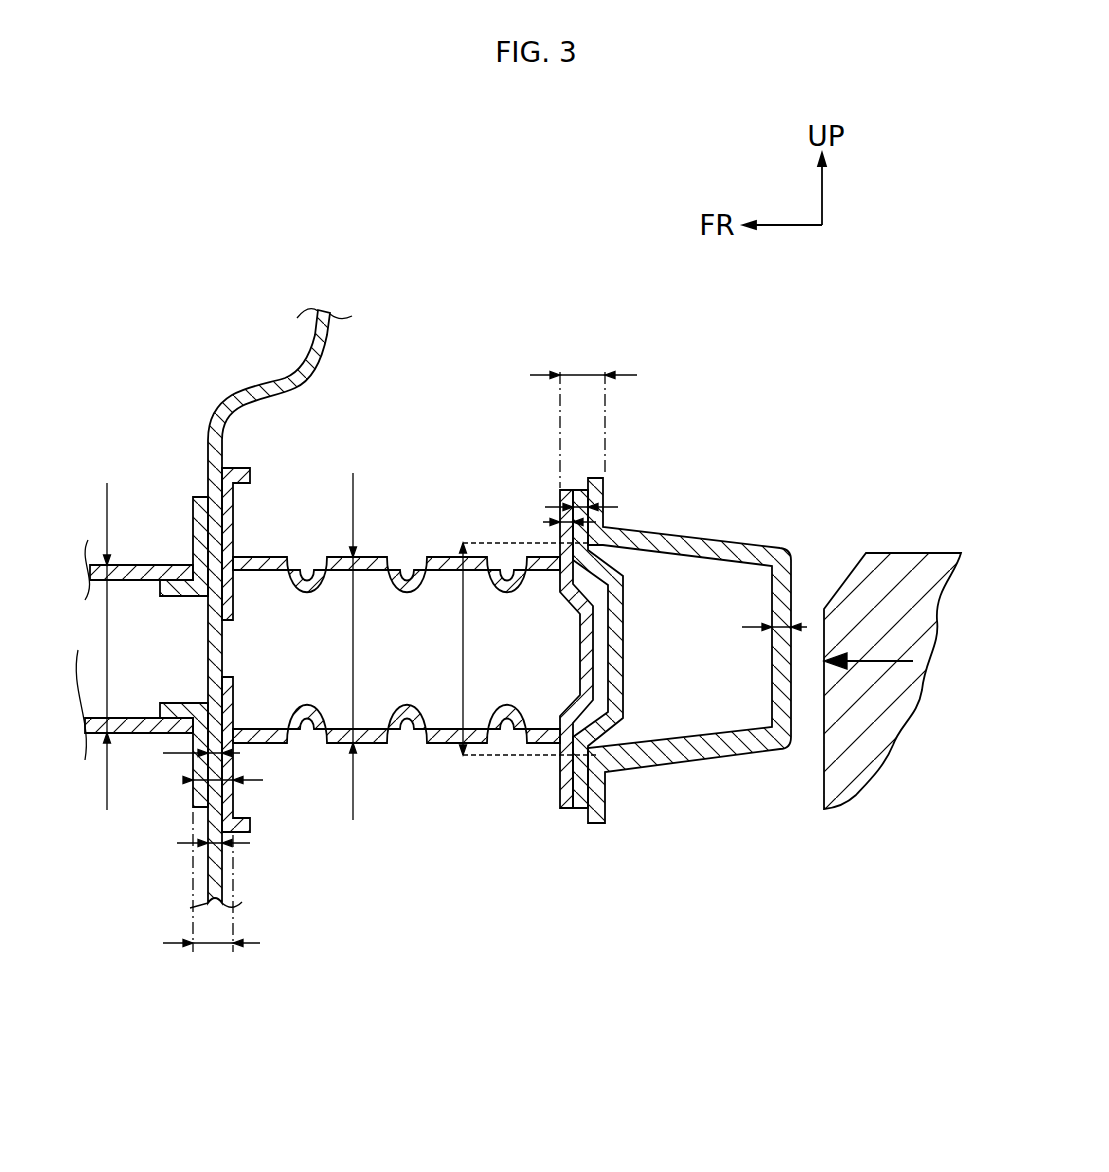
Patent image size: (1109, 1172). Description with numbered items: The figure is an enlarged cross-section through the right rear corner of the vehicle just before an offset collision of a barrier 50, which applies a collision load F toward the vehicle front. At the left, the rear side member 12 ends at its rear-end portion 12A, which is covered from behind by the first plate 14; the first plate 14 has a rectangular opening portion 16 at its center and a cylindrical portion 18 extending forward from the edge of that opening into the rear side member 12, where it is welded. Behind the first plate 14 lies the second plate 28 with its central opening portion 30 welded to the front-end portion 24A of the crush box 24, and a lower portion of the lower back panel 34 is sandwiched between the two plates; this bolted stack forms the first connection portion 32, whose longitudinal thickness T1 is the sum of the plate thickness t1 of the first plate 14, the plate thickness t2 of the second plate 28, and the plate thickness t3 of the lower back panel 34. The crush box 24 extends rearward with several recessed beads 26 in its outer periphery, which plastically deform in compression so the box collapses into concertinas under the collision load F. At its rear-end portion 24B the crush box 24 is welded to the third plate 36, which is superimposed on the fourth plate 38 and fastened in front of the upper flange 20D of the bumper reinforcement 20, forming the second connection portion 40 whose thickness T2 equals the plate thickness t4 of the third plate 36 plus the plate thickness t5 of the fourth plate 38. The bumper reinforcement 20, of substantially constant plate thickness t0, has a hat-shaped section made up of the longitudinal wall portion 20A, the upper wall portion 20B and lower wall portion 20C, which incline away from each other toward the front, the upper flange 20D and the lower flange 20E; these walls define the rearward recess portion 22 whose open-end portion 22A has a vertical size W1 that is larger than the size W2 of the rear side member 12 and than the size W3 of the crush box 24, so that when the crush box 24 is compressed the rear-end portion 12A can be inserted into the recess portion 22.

The rear side member 12 is at (134, 705).
The rear-end portion of the rear side member 12A is at (162, 562).
The first plate 14 is at (197, 496).
The rectangular opening portion 16 is at (203, 599).
The cylindrical portion 18 is at (190, 701).
The bumper reinforcement 20 is at (774, 538).
The longitudinal wall portion 20A is at (794, 594).
The upper wall portion 20B is at (698, 538).
The lower wall portion 20C is at (742, 756).
The upper flange 20D is at (605, 489).
The lower flange 20E is at (608, 822).
The recess portion 22 is at (678, 764).
The open-end portion of the recess portion 22A is at (617, 745).
The crush box 24 is at (372, 552).
The front-end portion of the crush box 24A is at (262, 556).
The rear-end portion of the crush box 24B is at (555, 726).
The recessed bead 26 is at (405, 594).
The second plate 28 is at (251, 467).
The opening portion 30 is at (232, 622).
The first connection portion 32 is at (315, 253).
The lower back panel 34 is at (225, 393).
The third plate 36 is at (568, 815).
The fourth plate 38 is at (581, 815).
The second connection portion 40 is at (528, 934).
The barrier 50 is at (913, 552).
The collision load F is at (850, 663).
The size of the open-end portion of the recess portion W1 is at (472, 757).
The size of the rear side member W2 is at (113, 744).
The size of the crush box W3 is at (360, 758).
The plate thickness of the first connection portion T1 is at (217, 950).
The plate thickness of the second connection portion T2 is at (583, 373).
The plate thickness of the bumper reinforcement t0 is at (769, 612).
The plate thickness of the first plate t1 is at (226, 752).
The plate thickness of the second plate t2 is at (226, 790).
The plate thickness of the lower back panel t3 is at (224, 858).
The plate thickness of the third plate t4 is at (558, 520).
The plate thickness of the fourth plate t5 is at (582, 497).